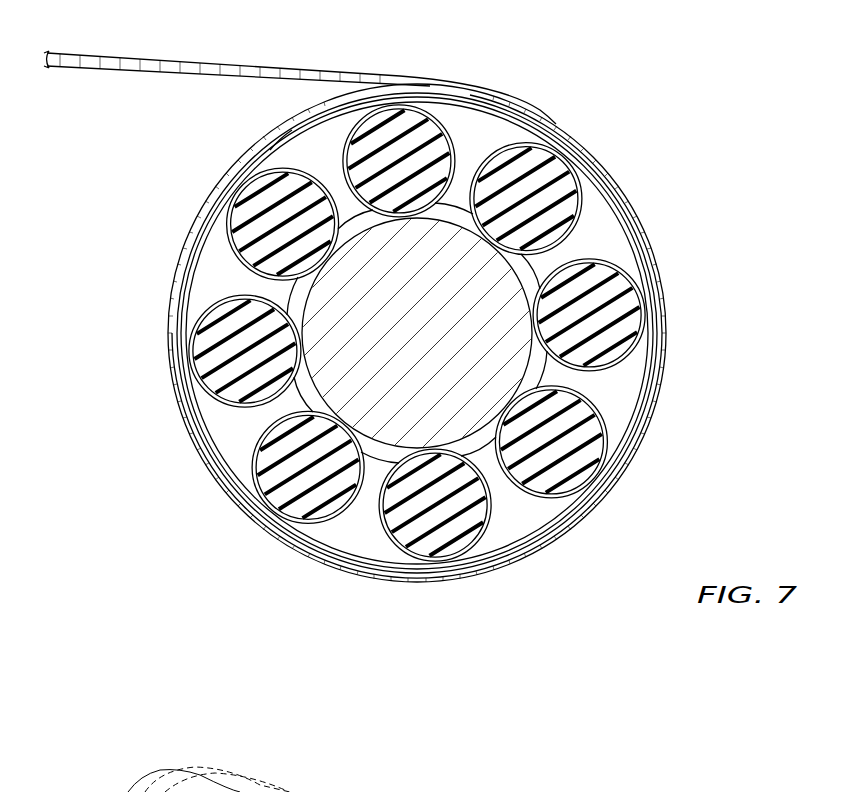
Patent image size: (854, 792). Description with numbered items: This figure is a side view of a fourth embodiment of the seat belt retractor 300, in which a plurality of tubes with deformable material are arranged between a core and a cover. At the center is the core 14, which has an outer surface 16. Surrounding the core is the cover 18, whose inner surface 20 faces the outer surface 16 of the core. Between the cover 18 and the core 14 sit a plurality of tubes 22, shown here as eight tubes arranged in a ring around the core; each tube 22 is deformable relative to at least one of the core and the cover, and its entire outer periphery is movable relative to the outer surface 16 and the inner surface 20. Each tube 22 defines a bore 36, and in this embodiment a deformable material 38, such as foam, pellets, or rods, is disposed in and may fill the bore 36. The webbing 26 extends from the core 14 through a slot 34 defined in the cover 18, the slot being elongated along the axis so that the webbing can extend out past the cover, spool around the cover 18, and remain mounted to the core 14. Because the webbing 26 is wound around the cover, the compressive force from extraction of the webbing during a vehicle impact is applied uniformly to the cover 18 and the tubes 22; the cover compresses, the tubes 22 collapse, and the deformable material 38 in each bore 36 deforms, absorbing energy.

The core 14 is at (427, 346).
The outer surface 16 is at (666, 322).
The cover 18 is at (342, 107).
The inner surface 20 is at (510, 134).
The tube 22 is at (497, 147).
The webbing 26 is at (125, 55).
The slot 34 is at (277, 140).
The bore 36 is at (404, 153).
The deformable material 38 is at (353, 128).
The seat belt retractor 300 is at (732, 18).